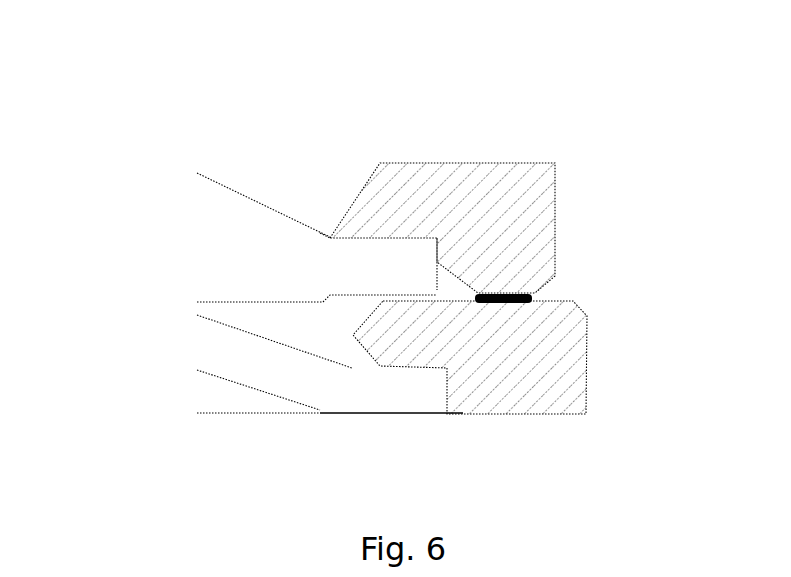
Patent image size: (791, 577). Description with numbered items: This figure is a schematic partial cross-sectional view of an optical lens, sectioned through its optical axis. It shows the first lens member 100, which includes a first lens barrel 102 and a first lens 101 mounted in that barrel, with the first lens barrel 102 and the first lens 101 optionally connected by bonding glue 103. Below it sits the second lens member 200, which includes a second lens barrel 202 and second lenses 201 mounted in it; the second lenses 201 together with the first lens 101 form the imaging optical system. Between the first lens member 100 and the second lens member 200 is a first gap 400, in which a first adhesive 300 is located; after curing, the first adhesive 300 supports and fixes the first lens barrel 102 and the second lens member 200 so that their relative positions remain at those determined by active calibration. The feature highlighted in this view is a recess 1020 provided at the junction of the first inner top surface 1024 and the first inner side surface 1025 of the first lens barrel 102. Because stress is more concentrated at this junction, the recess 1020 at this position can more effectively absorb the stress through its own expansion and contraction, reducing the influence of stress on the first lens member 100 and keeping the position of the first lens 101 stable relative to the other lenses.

The first lens member 100 is at (582, 175).
The first lens 101 is at (233, 202).
The first lens barrel 102 is at (385, 207).
The bonding glue 103 is at (447, 265).
The recess 1020 is at (438, 287).
The first inner top surface 1024 is at (357, 240).
The first inner side surface 1025 is at (437, 265).
The second lens member 200 is at (610, 317).
The second lens 201 is at (307, 382).
The second lens barrel 202 is at (573, 347).
The first adhesive 300 is at (503, 305).
The first gap 400 is at (457, 288).